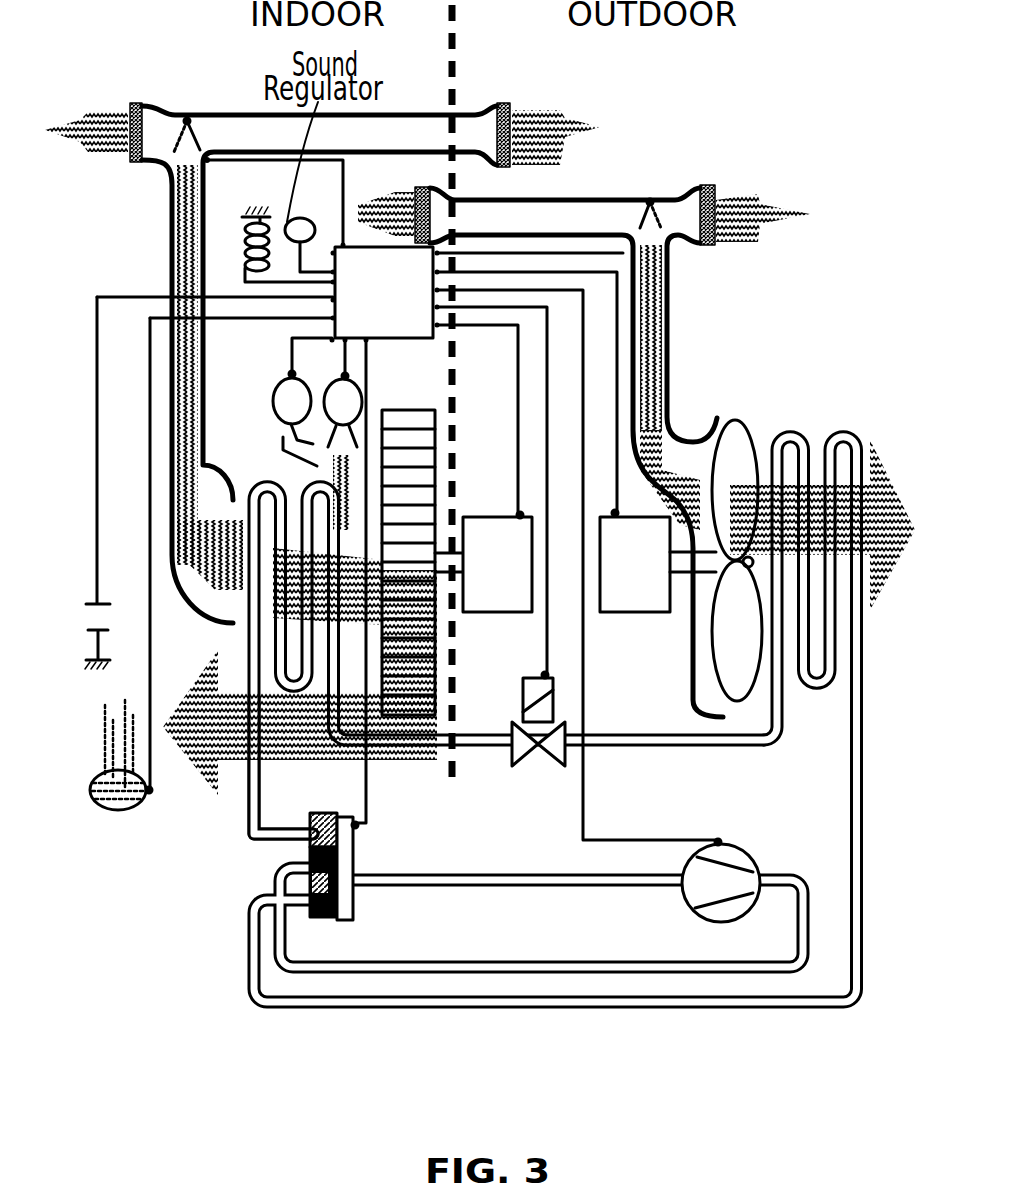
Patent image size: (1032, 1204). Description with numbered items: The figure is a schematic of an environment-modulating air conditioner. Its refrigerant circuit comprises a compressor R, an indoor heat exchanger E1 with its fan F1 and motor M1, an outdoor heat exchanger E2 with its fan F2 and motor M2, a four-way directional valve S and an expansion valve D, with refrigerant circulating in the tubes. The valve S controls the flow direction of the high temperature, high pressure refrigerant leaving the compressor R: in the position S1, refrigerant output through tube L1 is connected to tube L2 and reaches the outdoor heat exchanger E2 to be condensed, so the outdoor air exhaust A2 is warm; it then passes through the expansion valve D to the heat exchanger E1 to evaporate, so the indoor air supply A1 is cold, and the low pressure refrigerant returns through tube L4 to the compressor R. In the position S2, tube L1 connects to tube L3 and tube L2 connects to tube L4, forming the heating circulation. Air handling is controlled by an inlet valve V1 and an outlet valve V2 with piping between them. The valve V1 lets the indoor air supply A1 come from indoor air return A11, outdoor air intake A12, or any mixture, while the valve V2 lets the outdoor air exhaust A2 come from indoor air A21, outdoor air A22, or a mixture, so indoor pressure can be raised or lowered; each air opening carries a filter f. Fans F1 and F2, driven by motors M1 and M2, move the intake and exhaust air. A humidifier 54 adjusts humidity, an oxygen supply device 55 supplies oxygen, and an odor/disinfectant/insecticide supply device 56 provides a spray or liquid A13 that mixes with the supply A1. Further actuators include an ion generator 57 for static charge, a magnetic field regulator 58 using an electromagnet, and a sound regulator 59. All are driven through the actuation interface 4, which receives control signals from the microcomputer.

The filter f is at (128, 115).
The inlet valve V1 is at (190, 120).
The outlet valve V2 is at (645, 222).
The indoor air return A11 is at (97, 153).
The outdoor air intake A12 is at (543, 113).
The spray or liquid A13 is at (345, 508).
The indoor air A21 is at (402, 212).
The outdoor air A22 is at (737, 227).
The indoor air supply A1 is at (197, 763).
The outdoor air exhaust A2 is at (888, 500).
The actuation interface 4 is at (390, 312).
The humidifier 54 is at (108, 810).
The oxygen supply device 55 is at (272, 392).
The odor/disinfectant/insecticide supply device 56 is at (362, 402).
The ion generator 57 is at (88, 622).
The magnetic field regulator 58 is at (240, 247).
The sound regulator 59 is at (318, 209).
The indoor heat exchanger E1 is at (247, 487).
The outdoor heat exchanger E2 is at (800, 437).
The indoor fan F1 is at (428, 450).
The outdoor fan F2 is at (725, 440).
The indoor fan motor M1 is at (483, 603).
The outdoor fan motor M2 is at (623, 603).
The expansion valve D is at (522, 765).
The compressor R is at (745, 855).
The 4-way directional valve S is at (355, 838).
The valve position S1 is at (330, 918).
The valve position S2 is at (333, 804).
The tube L1 is at (507, 962).
The tube L2 is at (472, 1005).
The tube L3 is at (253, 840).
The tube L4 is at (502, 880).